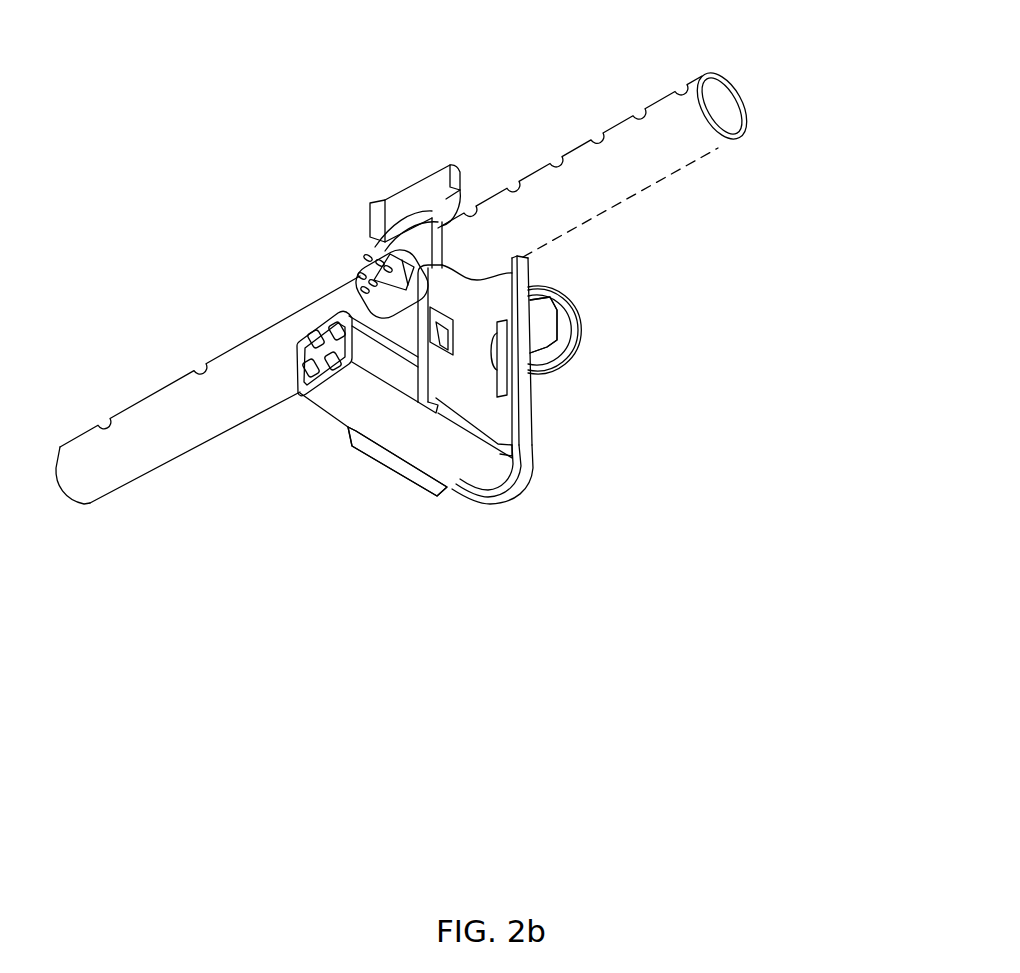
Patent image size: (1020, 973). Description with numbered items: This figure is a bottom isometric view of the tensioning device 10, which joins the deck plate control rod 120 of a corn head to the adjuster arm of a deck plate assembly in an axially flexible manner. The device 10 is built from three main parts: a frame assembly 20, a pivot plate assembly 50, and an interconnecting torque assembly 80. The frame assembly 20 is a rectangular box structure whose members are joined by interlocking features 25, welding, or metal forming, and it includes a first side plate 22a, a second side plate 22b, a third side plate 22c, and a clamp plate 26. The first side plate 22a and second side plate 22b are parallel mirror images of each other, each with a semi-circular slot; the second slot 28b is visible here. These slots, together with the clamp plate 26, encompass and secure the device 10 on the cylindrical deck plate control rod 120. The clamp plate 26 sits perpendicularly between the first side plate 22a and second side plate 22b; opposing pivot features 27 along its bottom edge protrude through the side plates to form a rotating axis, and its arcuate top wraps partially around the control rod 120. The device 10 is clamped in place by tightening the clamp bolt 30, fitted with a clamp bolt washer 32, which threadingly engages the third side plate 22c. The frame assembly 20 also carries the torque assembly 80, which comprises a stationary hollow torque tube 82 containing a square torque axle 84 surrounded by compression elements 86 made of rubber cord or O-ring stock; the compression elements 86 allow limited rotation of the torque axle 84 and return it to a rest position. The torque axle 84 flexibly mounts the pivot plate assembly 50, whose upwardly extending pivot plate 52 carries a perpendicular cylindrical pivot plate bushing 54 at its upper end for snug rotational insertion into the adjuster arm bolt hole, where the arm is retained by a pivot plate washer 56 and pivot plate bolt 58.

The tensioning device 10 is at (225, 206).
The frame assembly 20 is at (486, 183).
The first side plate 22a is at (385, 200).
The second side plate 22b is at (500, 312).
The third side plate 22c is at (548, 360).
The interlocking feature 25 is at (543, 325).
The clamp plate 26 is at (410, 213).
The pivot feature 27 is at (443, 327).
The second slot 28b is at (447, 278).
The clamp bolt 30 is at (366, 260).
The clamp bolt washer 32 is at (377, 300).
The pivot plate assembly 50 is at (528, 464).
The pivot plate 52 is at (495, 506).
The pivot plate bushing 54 is at (543, 320).
The pivot plate washer 56 is at (575, 322).
The pivot plate bolt 58 is at (577, 335).
The torque assembly 80 is at (348, 400).
The torque tube 82 is at (424, 448).
The torque axle 84 is at (308, 393).
The compression element 86 is at (338, 337).
The deck plate control rod 120 is at (574, 149).